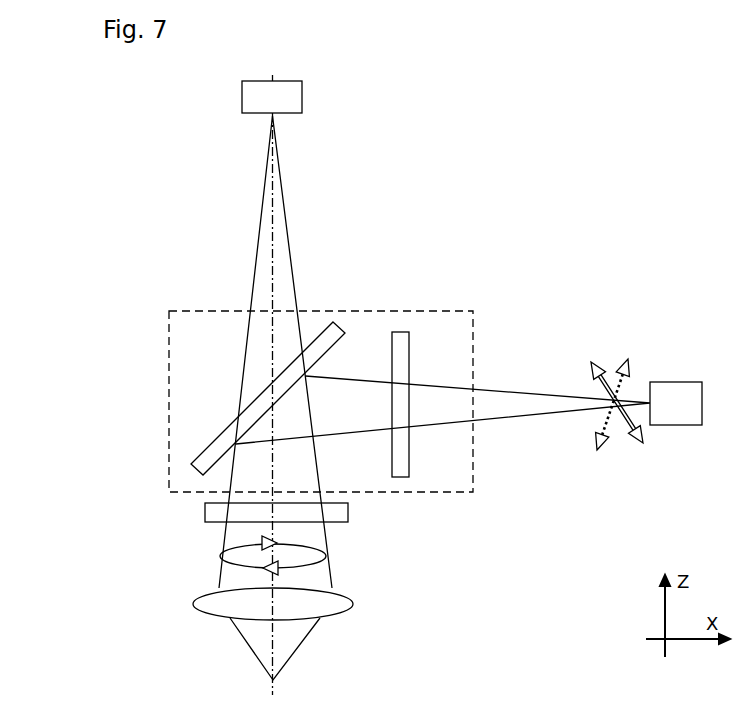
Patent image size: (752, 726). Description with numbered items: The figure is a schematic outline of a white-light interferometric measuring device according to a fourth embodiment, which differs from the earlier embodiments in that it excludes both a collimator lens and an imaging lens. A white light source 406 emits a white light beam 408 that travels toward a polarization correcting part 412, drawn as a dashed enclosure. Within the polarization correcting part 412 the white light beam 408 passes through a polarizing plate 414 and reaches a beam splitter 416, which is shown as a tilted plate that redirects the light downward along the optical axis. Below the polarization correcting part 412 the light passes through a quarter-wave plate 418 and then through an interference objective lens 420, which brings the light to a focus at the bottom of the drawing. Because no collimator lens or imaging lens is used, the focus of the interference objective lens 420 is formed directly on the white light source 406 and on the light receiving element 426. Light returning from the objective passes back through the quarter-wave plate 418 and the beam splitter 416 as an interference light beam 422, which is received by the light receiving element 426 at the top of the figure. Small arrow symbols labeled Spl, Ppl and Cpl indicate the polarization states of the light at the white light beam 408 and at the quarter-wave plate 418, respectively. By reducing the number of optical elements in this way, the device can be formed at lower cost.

The white light source 406 is at (676, 388).
The white light beam 408 is at (523, 417).
The polarization correcting part 412 is at (398, 315).
The polarizing plate 414 is at (400, 444).
The beam splitter 416 is at (235, 435).
The quarter-wave plate 418 is at (348, 510).
The interference objective lens 420 is at (348, 605).
The interference light beam 422 is at (285, 252).
The light receiving element 426 is at (298, 100).
The S-polarized light direction Spl is at (610, 389).
The P-polarized light direction Ppl is at (626, 393).
The circularly polarized light Cpl is at (326, 556).